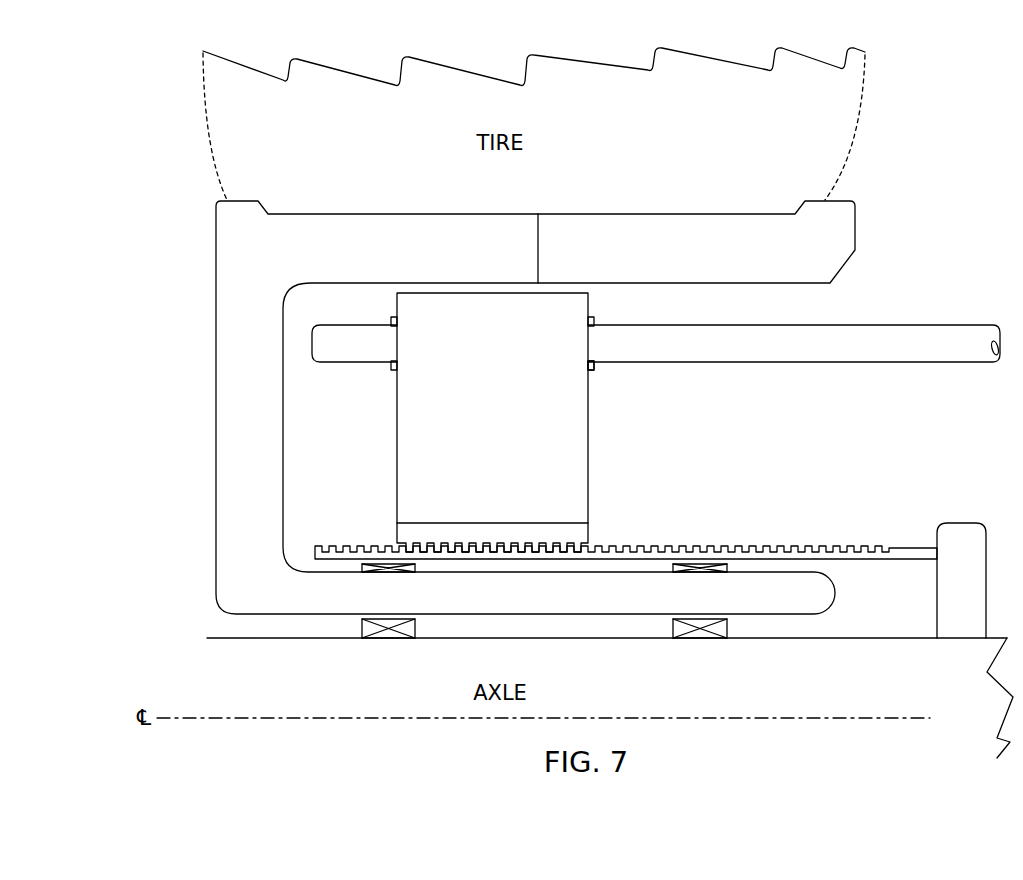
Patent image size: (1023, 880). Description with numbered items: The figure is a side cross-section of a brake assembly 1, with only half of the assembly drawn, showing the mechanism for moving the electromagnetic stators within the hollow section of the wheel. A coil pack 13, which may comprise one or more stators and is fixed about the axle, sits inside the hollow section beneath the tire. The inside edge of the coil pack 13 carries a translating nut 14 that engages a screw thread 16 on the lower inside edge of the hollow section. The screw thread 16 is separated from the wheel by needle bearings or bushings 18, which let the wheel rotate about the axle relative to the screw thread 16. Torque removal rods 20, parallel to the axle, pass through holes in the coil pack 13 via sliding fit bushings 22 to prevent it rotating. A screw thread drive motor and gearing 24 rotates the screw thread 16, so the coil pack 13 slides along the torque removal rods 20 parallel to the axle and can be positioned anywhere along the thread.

The tire pressure adjustment system 1 is at (83, 292).
The coil pack 13 is at (397, 437).
The translating nut 14 is at (590, 533).
The screw thread 16 is at (735, 546).
The needle bearings or bushings 18 is at (384, 562).
The torque removal rods 20 is at (770, 353).
The sliding fit bushings 22 is at (596, 368).
The screw thread drive motor and gearing 24 is at (964, 537).